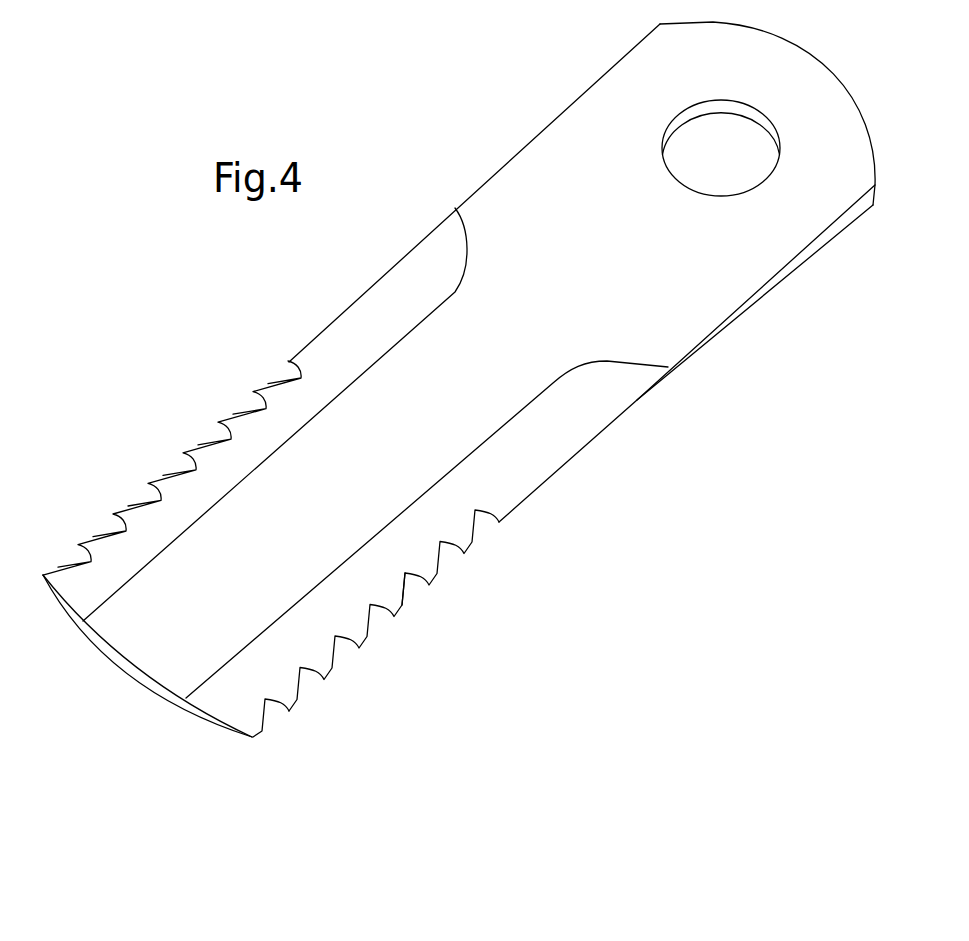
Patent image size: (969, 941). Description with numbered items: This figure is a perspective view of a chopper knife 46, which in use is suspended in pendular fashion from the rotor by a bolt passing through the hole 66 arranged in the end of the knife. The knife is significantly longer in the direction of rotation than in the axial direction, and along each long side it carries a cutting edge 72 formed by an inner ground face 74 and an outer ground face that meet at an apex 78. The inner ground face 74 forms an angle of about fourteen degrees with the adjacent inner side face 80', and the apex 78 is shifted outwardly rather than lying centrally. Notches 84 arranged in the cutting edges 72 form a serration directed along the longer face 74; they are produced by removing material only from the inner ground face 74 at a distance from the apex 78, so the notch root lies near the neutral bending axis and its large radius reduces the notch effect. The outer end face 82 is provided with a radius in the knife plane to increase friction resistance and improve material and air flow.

The cutting edge 72 is at (454, 459).
The chopper knife 46 is at (698, 268).
The hole 66 is at (720, 148).
The inner ground face 74 is at (82, 593).
The apex 78 is at (290, 707).
The inner side face 80' is at (375, 515).
The outer end face 82 is at (118, 667).
The notch 84 is at (411, 582).